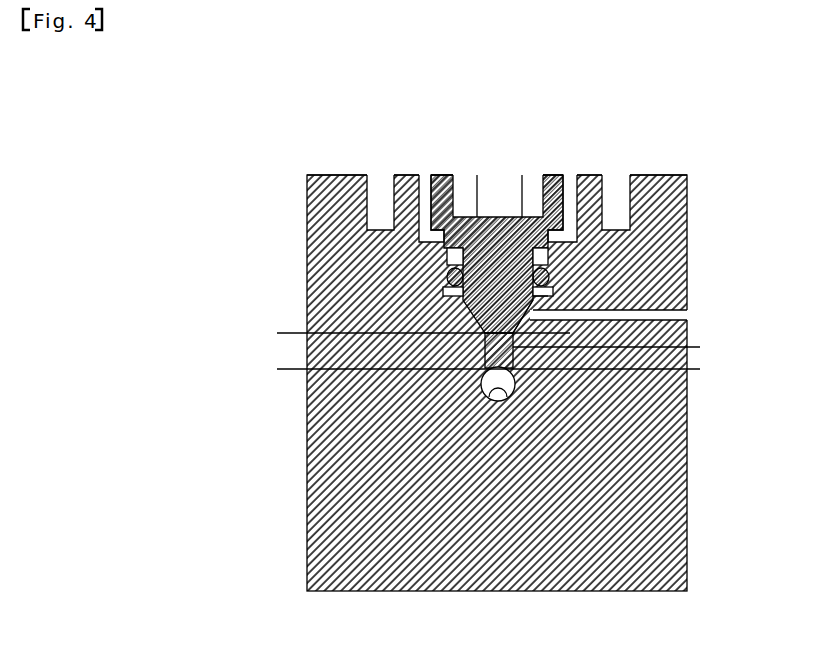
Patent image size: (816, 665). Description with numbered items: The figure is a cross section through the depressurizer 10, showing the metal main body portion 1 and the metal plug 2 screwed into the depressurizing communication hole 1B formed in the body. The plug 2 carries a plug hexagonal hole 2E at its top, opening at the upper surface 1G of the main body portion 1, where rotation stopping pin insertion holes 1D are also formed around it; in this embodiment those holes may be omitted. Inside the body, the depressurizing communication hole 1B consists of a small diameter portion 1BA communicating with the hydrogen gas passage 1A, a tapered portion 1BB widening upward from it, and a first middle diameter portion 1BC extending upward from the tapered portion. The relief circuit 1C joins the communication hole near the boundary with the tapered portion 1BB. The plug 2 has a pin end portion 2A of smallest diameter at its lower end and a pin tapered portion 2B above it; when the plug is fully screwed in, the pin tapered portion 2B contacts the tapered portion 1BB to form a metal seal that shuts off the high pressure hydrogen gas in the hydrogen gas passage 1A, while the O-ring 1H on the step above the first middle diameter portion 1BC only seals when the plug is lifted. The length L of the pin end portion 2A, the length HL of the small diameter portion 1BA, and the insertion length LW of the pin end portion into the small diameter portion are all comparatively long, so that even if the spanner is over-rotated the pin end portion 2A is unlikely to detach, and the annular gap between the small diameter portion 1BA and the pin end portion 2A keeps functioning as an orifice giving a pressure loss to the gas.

The depressurizer 10 is at (290, 143).
The main body portion 1 is at (307, 565).
The hydrogen gas passage 1A is at (505, 400).
The depressurizing communication hole 1B is at (465, 262).
The small diameter portion 1BA is at (475, 323).
The tapered portion 1BB is at (533, 306).
The first middle diameter portion 1BC is at (538, 298).
The relief circuit 1C is at (654, 310).
The rotation stopping pin insertion hole 1D is at (630, 200).
The upper surface 1G is at (670, 176).
The O-ring 1H is at (445, 272).
The plug 2 is at (555, 176).
The pin end portion 2A is at (513, 350).
The pin tapered portion 2B is at (463, 300).
The plug hexagonal hole 2E is at (455, 195).
The length of the pin end portion L is at (483, 369).
The length of the small diameter portion HL is at (289, 312).
The insertion length LW is at (695, 325).